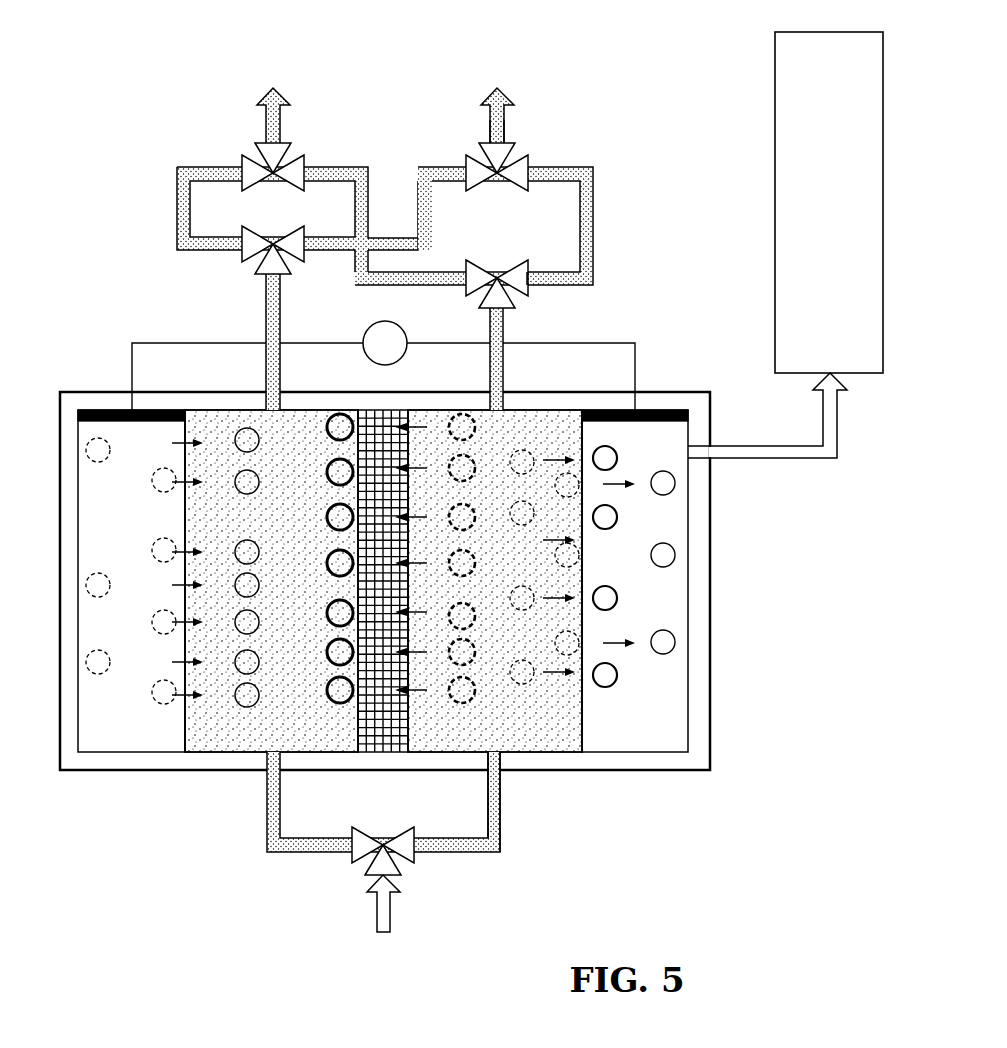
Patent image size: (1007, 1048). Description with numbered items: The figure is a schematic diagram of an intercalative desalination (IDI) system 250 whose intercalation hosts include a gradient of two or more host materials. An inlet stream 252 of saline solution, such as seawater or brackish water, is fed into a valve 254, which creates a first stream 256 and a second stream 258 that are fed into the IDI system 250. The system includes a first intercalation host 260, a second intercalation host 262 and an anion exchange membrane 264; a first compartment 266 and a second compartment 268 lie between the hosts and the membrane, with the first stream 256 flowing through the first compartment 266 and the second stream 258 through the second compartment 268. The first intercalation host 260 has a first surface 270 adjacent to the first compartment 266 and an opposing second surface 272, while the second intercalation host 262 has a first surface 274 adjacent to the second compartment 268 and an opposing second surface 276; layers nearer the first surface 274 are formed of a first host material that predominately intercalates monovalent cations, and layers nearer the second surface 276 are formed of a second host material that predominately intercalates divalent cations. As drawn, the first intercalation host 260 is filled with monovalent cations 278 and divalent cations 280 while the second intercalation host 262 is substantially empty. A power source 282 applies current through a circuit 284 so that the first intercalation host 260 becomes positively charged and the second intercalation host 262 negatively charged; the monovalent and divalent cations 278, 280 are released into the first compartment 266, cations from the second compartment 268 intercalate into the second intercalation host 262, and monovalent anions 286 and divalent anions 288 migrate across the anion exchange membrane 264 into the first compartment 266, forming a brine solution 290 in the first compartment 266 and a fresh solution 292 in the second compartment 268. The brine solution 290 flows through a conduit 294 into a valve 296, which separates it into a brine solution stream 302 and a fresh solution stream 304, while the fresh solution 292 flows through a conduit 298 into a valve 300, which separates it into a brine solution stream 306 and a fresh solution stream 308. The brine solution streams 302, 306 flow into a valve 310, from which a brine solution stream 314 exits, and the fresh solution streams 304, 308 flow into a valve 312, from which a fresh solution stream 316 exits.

The intercalative desalination (IDI) system 250 is at (110, 800).
The inlet stream 252 is at (375, 910).
The valve 254 is at (352, 857).
The first stream 256 is at (267, 810).
The second stream 258 is at (500, 795).
The first intercalation host 260 is at (116, 745).
The second intercalation host 262 is at (619, 745).
The anion exchange membrane 264 is at (367, 745).
The first compartment 266 is at (254, 742).
The second compartment 268 is at (479, 742).
The first surface 270 is at (187, 727).
The second surface 272 is at (88, 672).
The first surface 274 is at (775, 202).
The second surface 276 is at (883, 202).
The monovalent cations 278 is at (155, 470).
The divalent cations 280 is at (86, 583).
The power source 282 is at (369, 356).
The circuit 284 is at (187, 343).
The monovalent anions 286 is at (475, 462).
The divalent anions 288 is at (460, 414).
The brine solution 290 is at (272, 445).
The fresh solution 292 is at (516, 443).
The conduit 294 is at (280, 325).
The valve 296 is at (242, 250).
The conduit 298 is at (488, 332).
The valve 300 is at (527, 288).
The brine solution stream 302 is at (177, 207).
The fresh solution stream 304 is at (445, 167).
The brine solution stream 306 is at (435, 272).
The fresh solution stream 308 is at (593, 225).
The valve 310 is at (242, 167).
The valve 312 is at (505, 140).
The brine solution stream 314 is at (266, 117).
The fresh solution stream 316 is at (490, 117).